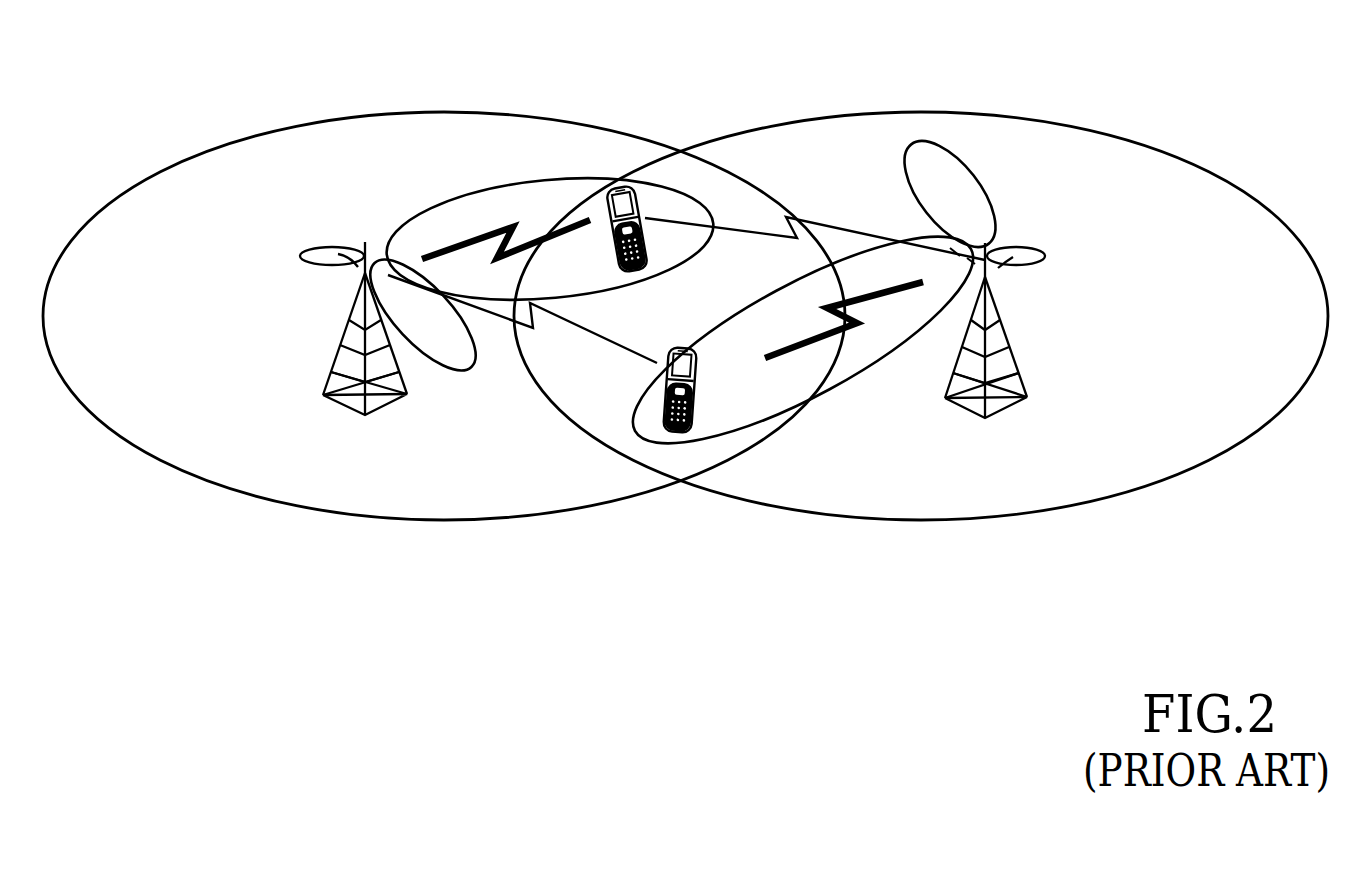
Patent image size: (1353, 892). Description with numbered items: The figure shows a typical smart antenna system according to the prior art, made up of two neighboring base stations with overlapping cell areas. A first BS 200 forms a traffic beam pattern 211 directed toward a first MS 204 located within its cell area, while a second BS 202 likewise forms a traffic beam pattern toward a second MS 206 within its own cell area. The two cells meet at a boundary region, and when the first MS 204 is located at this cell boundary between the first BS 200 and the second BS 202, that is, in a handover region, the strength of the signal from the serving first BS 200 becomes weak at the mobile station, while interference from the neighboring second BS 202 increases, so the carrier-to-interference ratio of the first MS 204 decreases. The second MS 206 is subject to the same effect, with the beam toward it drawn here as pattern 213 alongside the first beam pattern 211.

The first BS 200 is at (353, 352).
The second BS 202 is at (995, 354).
The first MS 204 is at (601, 232).
The second MS 206 is at (705, 390).
The traffic beam pattern 211 is at (493, 230).
The interference signal from second base station 213 is at (863, 235).